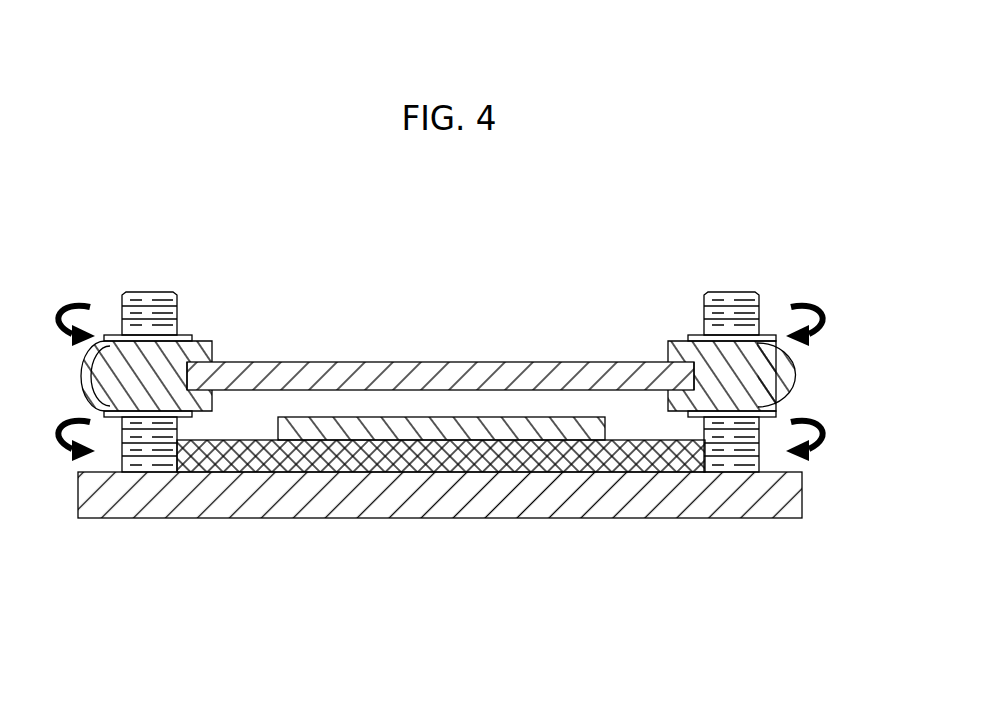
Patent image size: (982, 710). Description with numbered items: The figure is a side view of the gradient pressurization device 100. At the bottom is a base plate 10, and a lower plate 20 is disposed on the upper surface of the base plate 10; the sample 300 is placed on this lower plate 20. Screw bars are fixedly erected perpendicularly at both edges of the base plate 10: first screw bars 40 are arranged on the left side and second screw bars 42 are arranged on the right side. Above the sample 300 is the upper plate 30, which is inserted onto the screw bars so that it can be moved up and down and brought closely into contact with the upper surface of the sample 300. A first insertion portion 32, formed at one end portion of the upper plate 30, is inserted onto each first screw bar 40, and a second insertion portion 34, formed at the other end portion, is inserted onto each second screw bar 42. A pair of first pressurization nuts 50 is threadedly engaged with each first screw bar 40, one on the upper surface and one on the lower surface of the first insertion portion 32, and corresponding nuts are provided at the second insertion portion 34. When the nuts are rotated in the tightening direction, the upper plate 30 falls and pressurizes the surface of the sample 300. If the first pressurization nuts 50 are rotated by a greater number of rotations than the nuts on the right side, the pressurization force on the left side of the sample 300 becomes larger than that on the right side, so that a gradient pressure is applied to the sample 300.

The gradient pressurization device 100 is at (575, 286).
The base plate 10 is at (546, 503).
The lower plate 20 is at (653, 458).
The sample 300 is at (381, 428).
The upper plate 30 is at (474, 372).
The first insertion portion 32 is at (168, 380).
The second insertion portion 34 is at (796, 375).
The first screw bar 40 is at (163, 289).
The second screw bar 42 is at (737, 290).
The first pressurization nut 50 is at (103, 341).